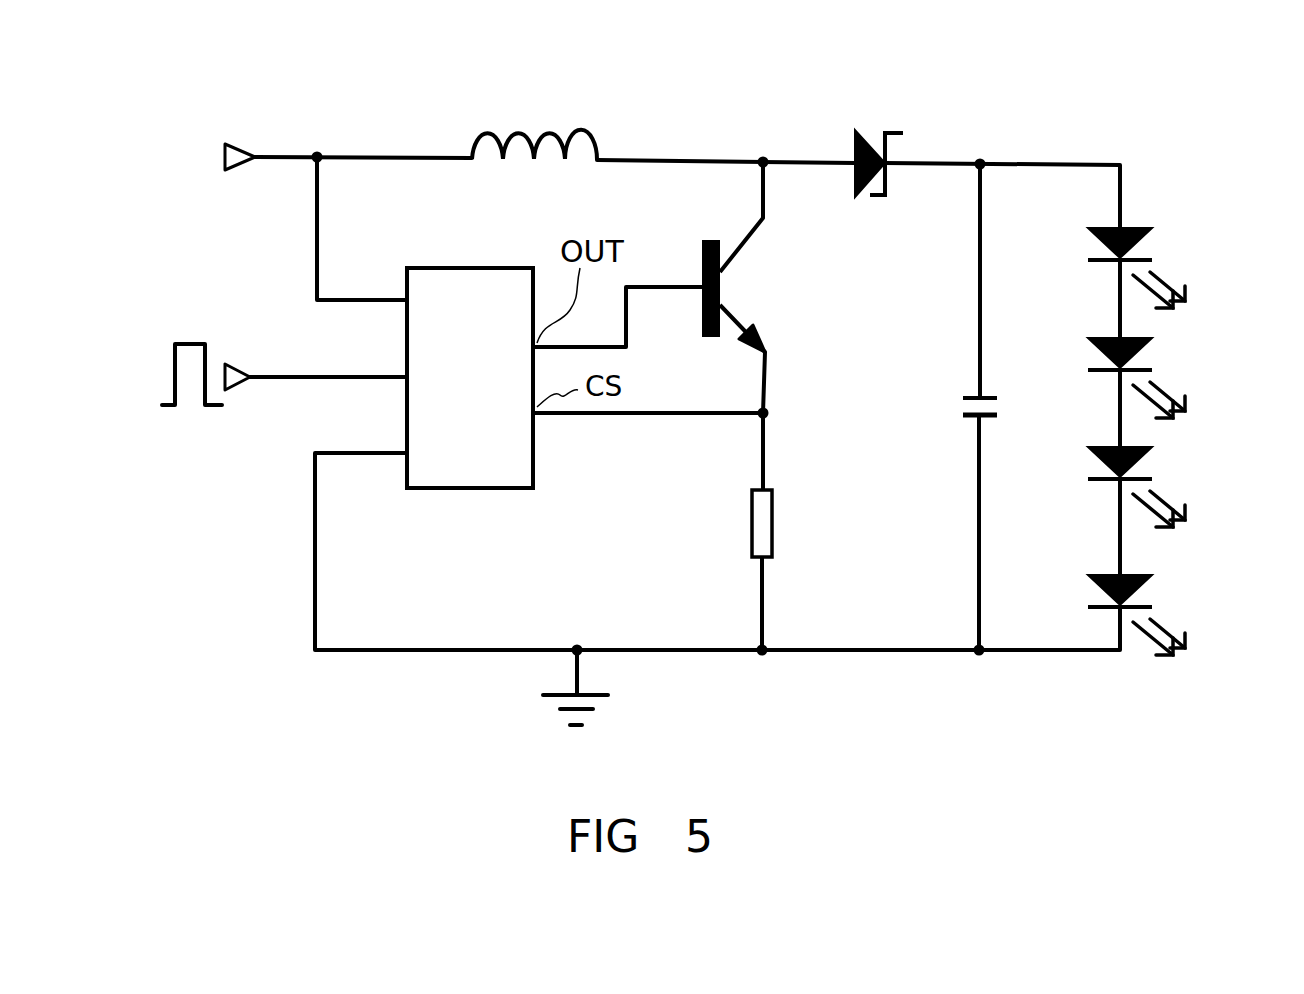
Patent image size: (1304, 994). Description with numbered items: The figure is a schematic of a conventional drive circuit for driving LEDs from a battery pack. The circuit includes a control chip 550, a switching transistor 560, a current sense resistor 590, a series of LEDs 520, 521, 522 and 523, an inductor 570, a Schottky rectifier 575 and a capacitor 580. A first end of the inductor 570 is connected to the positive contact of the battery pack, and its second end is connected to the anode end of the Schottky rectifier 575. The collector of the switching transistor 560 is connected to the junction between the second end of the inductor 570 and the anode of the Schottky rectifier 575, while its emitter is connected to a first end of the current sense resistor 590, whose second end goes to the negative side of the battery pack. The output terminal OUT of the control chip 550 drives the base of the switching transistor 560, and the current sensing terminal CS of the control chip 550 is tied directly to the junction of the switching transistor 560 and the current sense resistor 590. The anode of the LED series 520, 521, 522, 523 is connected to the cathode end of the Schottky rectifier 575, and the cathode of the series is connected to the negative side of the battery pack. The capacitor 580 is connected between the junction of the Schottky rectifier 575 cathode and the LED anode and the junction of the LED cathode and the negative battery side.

The LED 520 is at (1130, 226).
The LED 521 is at (1152, 343).
The LED 522 is at (1150, 447).
The LED 523 is at (1138, 577).
The control chip 550 is at (518, 462).
The switching transistor 560 is at (722, 282).
The inductor 570 is at (558, 122).
The Schottky rectifier 575 is at (855, 153).
The capacitor 580 is at (992, 395).
The current sense resistor 590 is at (752, 524).